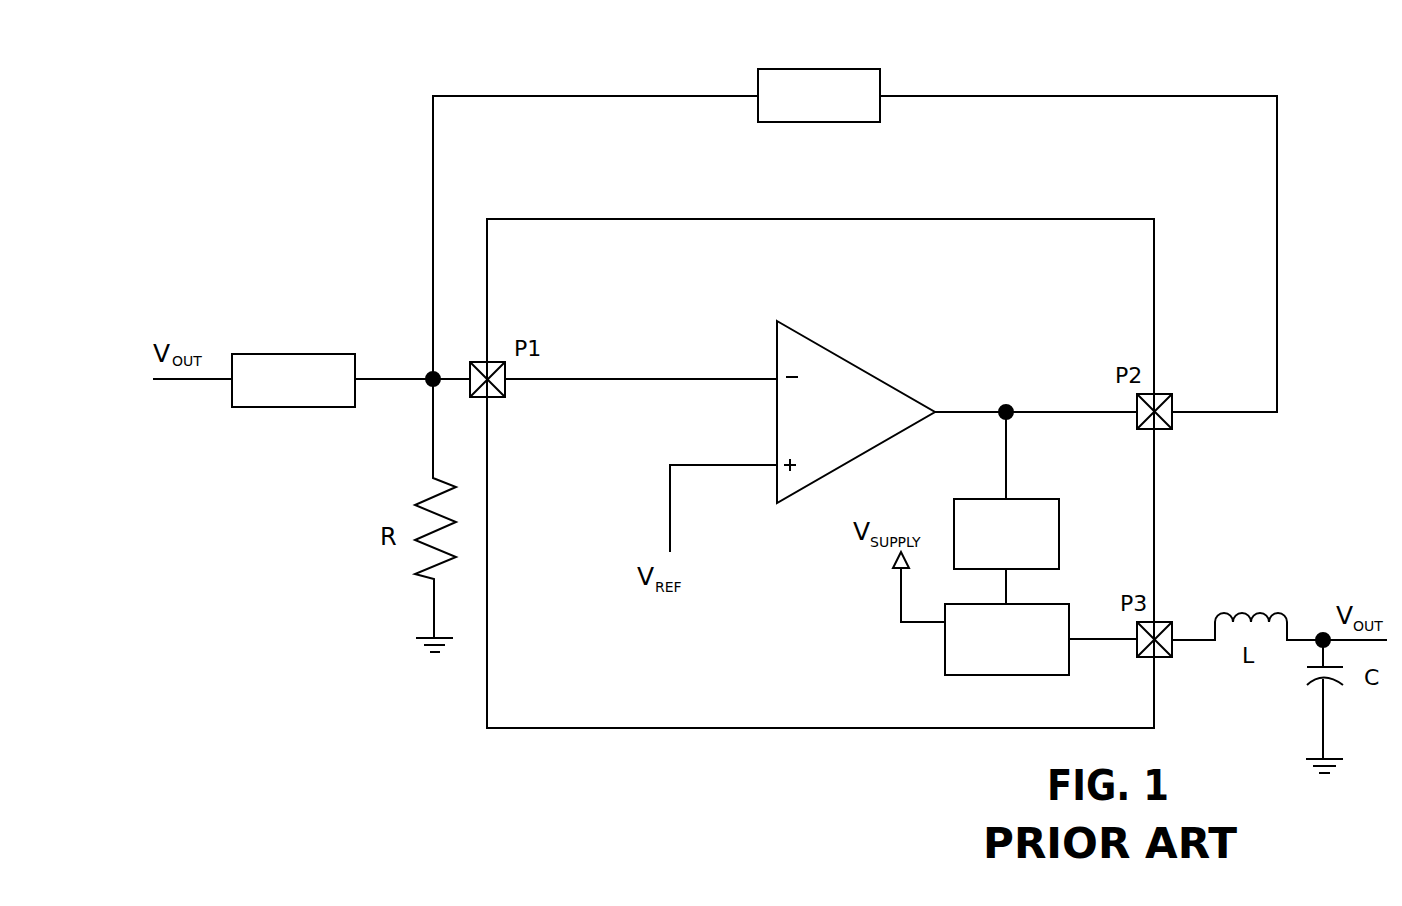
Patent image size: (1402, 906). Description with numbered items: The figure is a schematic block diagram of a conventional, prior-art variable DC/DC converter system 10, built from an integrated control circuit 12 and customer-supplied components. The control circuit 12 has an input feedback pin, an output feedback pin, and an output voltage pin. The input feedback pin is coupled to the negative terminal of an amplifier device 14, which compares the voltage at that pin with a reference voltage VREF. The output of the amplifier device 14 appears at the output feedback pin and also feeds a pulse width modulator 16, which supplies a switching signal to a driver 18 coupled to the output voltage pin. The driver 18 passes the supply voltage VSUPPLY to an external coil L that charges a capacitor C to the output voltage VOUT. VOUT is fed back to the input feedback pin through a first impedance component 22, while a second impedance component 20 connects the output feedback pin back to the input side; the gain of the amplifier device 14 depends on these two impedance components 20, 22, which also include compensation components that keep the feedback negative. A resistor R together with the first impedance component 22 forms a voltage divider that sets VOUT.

The variable DC/DC converter system 10 is at (1203, 32).
The integrated control circuit 12 is at (997, 218).
The amplifier device 14 is at (827, 348).
The pulse width modulator 16 is at (1042, 498).
The driver 18 is at (1033, 603).
The second impedance component 20 is at (854, 69).
The first impedance component 22 is at (284, 354).